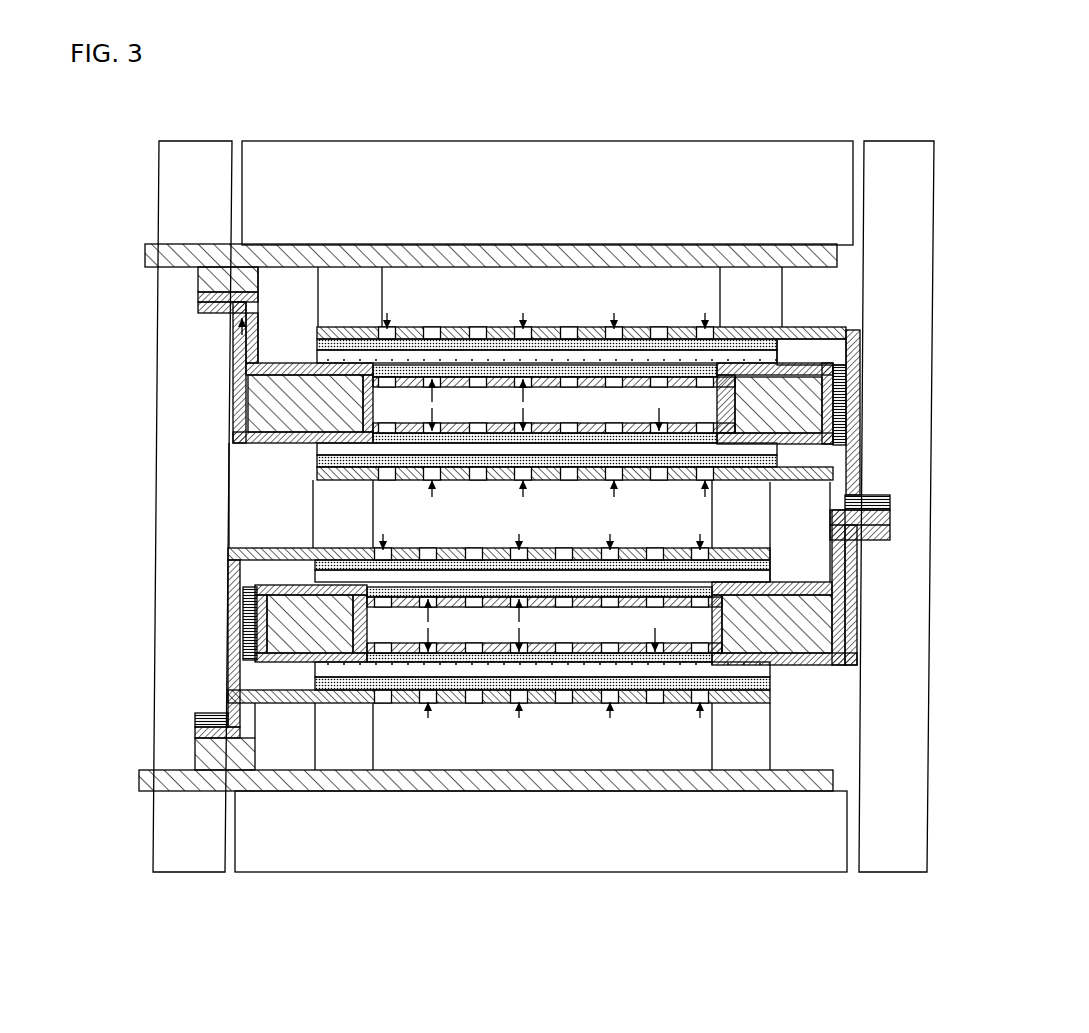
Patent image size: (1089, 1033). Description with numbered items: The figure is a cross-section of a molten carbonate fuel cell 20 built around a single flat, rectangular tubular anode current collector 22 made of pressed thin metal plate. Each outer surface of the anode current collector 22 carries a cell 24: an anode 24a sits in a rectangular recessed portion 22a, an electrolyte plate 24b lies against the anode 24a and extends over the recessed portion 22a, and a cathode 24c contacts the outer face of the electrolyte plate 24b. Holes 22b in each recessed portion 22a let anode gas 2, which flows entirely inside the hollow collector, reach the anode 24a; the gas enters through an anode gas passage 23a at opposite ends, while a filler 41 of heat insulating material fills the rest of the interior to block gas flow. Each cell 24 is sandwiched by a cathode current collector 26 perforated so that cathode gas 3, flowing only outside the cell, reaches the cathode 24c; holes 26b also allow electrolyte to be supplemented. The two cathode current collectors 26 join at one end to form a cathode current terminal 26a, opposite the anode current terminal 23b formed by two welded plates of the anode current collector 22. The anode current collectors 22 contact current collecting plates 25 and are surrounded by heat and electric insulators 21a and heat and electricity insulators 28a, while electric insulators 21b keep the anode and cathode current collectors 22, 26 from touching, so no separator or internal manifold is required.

The anode gas 2 is at (586, 421).
The cathode gas 3 is at (594, 316).
The molten carbonate fuel cell 20 is at (978, 245).
The heat and electric insulator 21a is at (178, 562).
The electric insulator 21b is at (862, 396).
The anode current collector 22 is at (236, 408).
The recessed portion 22a is at (631, 365).
The holes 22b is at (663, 378).
The anode gas passage 23a is at (340, 443).
The anode current terminal 23b is at (208, 312).
The cell 24 is at (316, 345).
The anode 24a is at (460, 380).
The electrolyte plate 24b is at (457, 355).
The cathode 24c is at (510, 330).
The current collecting plate 25 is at (316, 244).
The cathode current collector 26 is at (858, 322).
The cathode current terminal 26a is at (893, 497).
The holes 26b is at (660, 482).
The heat and electricity insulator 28a is at (569, 201).
The filler 41 is at (248, 443).